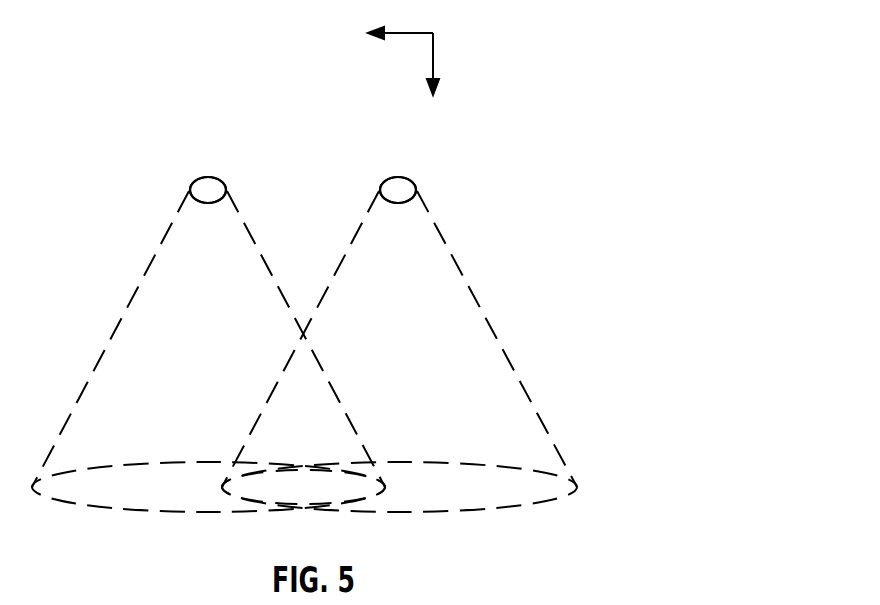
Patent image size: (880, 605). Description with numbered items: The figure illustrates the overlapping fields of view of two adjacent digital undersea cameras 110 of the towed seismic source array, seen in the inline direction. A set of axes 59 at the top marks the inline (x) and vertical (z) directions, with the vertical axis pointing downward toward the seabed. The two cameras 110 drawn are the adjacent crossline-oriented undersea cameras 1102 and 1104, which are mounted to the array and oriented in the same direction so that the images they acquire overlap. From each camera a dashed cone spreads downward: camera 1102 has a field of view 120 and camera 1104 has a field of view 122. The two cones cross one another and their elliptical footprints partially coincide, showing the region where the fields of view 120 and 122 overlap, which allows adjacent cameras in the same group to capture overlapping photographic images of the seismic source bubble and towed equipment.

The axes 59 is at (458, 50).
The digital undersea camera 110 is at (200, 178).
The undersea camera 1102 is at (218, 178).
The undersea camera 1104 is at (412, 183).
The field of view 120 is at (138, 284).
The field of view 122 is at (477, 290).